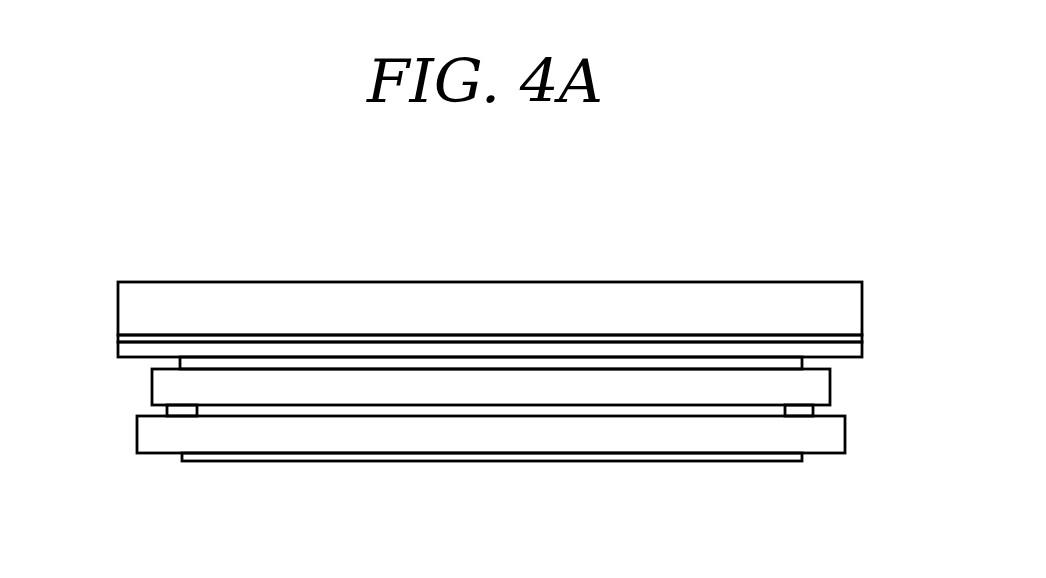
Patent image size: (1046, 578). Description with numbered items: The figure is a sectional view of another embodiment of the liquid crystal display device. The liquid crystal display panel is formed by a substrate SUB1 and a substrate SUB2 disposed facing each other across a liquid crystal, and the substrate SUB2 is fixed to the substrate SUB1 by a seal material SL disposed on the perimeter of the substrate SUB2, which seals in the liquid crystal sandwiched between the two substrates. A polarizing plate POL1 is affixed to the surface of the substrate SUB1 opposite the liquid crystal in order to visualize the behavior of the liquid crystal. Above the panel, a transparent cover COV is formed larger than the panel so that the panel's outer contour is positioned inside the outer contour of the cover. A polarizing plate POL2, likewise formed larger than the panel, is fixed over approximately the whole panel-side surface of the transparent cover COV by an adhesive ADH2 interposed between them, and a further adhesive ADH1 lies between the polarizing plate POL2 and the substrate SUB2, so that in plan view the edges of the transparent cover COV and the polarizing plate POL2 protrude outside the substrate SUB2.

The transparent cover COV is at (442, 293).
The adhesive ADH2 is at (670, 335).
The polarizing plate POL2 is at (395, 350).
The first adhesive layer ADH1 is at (548, 367).
The substrate SUB2 is at (212, 387).
The seal material SL is at (177, 413).
The substrate SUB1 is at (255, 438).
The polarizing plate POL1 is at (312, 460).